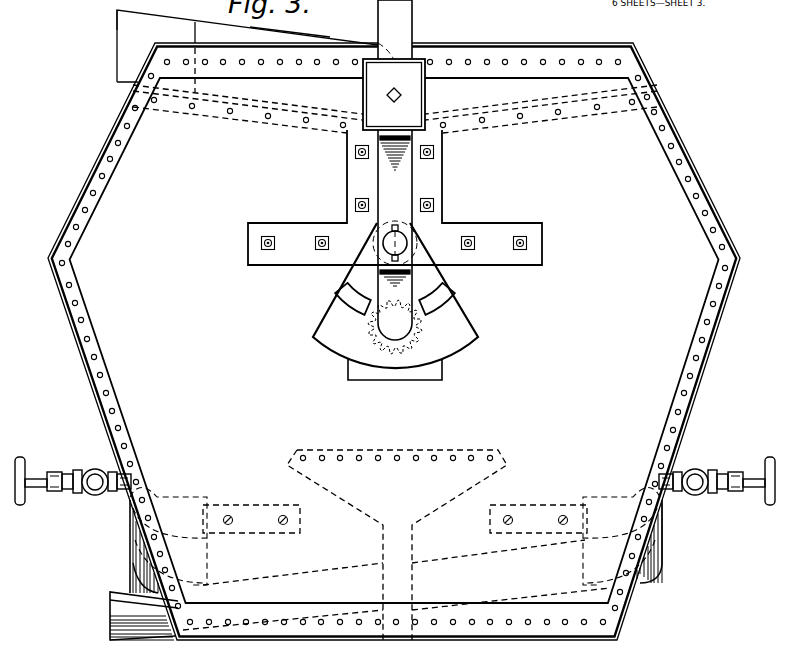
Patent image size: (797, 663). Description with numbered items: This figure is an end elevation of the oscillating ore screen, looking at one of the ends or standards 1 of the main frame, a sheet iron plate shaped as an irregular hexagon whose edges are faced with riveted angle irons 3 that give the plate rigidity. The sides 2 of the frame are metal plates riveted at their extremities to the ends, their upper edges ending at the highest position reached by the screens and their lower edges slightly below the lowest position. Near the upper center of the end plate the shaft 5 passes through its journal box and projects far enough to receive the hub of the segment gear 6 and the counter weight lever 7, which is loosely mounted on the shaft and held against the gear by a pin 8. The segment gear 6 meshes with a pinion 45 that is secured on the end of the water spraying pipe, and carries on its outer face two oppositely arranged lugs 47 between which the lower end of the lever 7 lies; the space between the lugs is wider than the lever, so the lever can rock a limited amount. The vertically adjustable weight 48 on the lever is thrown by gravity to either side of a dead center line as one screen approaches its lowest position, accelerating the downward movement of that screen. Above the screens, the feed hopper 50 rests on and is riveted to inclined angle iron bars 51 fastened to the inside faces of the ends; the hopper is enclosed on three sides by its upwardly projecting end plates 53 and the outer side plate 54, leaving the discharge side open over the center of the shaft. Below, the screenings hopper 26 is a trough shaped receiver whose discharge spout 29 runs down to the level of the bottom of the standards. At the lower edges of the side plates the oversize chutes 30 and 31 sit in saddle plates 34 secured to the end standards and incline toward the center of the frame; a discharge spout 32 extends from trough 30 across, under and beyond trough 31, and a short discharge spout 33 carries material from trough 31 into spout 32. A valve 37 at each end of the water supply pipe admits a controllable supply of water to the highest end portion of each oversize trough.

The ends or standards 1 is at (394, 341).
The sides 2 is at (90, 379).
The angle irons 3 is at (591, 56).
The shaft 5 is at (418, 236).
The segment gear 6 is at (450, 310).
The counter weight lever 7 is at (417, 24).
The pin 8 is at (380, 226).
The hopper 26 is at (362, 514).
The discharge spout 29 is at (413, 538).
The oversize chute 30 is at (662, 558).
The oversize chute 31 is at (130, 540).
The discharge spout 32 is at (148, 614).
The short discharge spout 33 is at (129, 577).
The saddle plates 34 is at (261, 532).
The valve 37 is at (65, 496).
The pinion 45 is at (380, 324).
The lugs 47 is at (343, 305).
The weight 48 is at (422, 95).
The hopper 50 is at (116, 47).
The angle iron bars 51 is at (235, 117).
The end plates 53 is at (308, 39).
The plate 54 is at (127, 21).